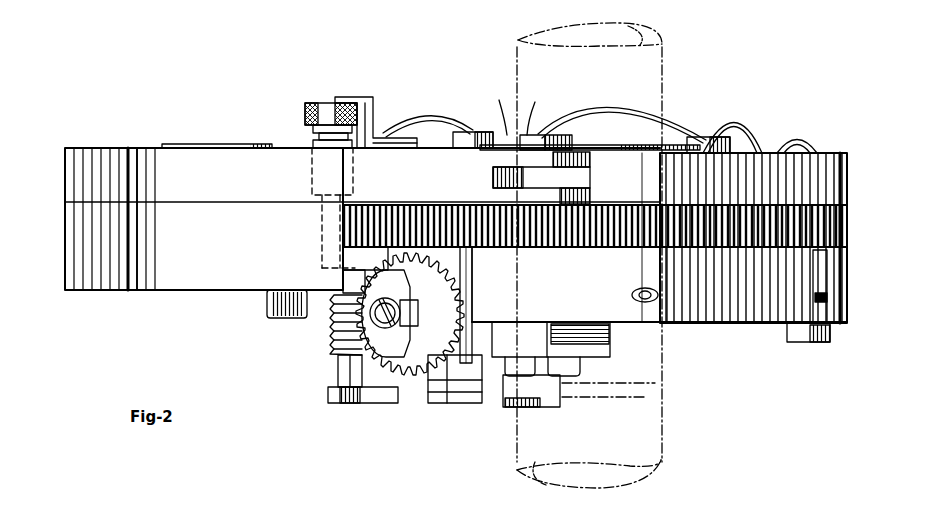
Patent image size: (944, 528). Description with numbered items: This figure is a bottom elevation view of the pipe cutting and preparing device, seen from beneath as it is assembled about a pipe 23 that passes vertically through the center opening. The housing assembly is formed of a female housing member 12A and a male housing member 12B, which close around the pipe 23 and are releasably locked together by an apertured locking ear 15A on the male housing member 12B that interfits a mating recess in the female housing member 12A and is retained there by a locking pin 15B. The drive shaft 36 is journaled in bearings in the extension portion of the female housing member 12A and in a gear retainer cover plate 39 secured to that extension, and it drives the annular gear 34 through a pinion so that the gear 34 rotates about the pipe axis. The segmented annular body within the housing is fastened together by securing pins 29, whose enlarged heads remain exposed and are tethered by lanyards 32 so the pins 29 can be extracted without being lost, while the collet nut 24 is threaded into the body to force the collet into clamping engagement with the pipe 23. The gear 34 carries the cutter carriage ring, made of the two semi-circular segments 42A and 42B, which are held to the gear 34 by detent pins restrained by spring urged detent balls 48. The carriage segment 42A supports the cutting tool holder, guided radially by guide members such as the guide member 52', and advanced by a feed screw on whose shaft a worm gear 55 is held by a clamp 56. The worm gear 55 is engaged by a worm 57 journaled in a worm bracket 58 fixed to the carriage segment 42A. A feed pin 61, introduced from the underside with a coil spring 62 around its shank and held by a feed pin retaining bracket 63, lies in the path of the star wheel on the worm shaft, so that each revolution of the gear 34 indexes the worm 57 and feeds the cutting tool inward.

The female housing member 12A is at (118, 147).
The male housing member 12B is at (828, 152).
The drive shaft 36 is at (178, 144).
The gear retainer cover plate 39 is at (148, 285).
The feed pin 61 is at (318, 103).
The coil spring 62 is at (312, 130).
The feed pin retaining bracket 63 is at (368, 97).
The lanyards 32 is at (420, 116).
The securing pins 29 is at (480, 130).
The locking pin 15B is at (532, 112).
The locking ear 15A is at (573, 180).
The collet nut 24 is at (603, 145).
The pipe 23 is at (668, 56).
The annular gear 34 is at (536, 250).
The spring urged detent balls 48 is at (631, 294).
The worm gear 55 is at (414, 378).
The clamp 56 is at (398, 296).
The worm 57 is at (330, 348).
The worm bracket 58 is at (352, 405).
The guide member 52' is at (579, 382).
The cutter carriage ring segment 42A is at (702, 323).
The cutter carriage ring segment 42B is at (770, 323).